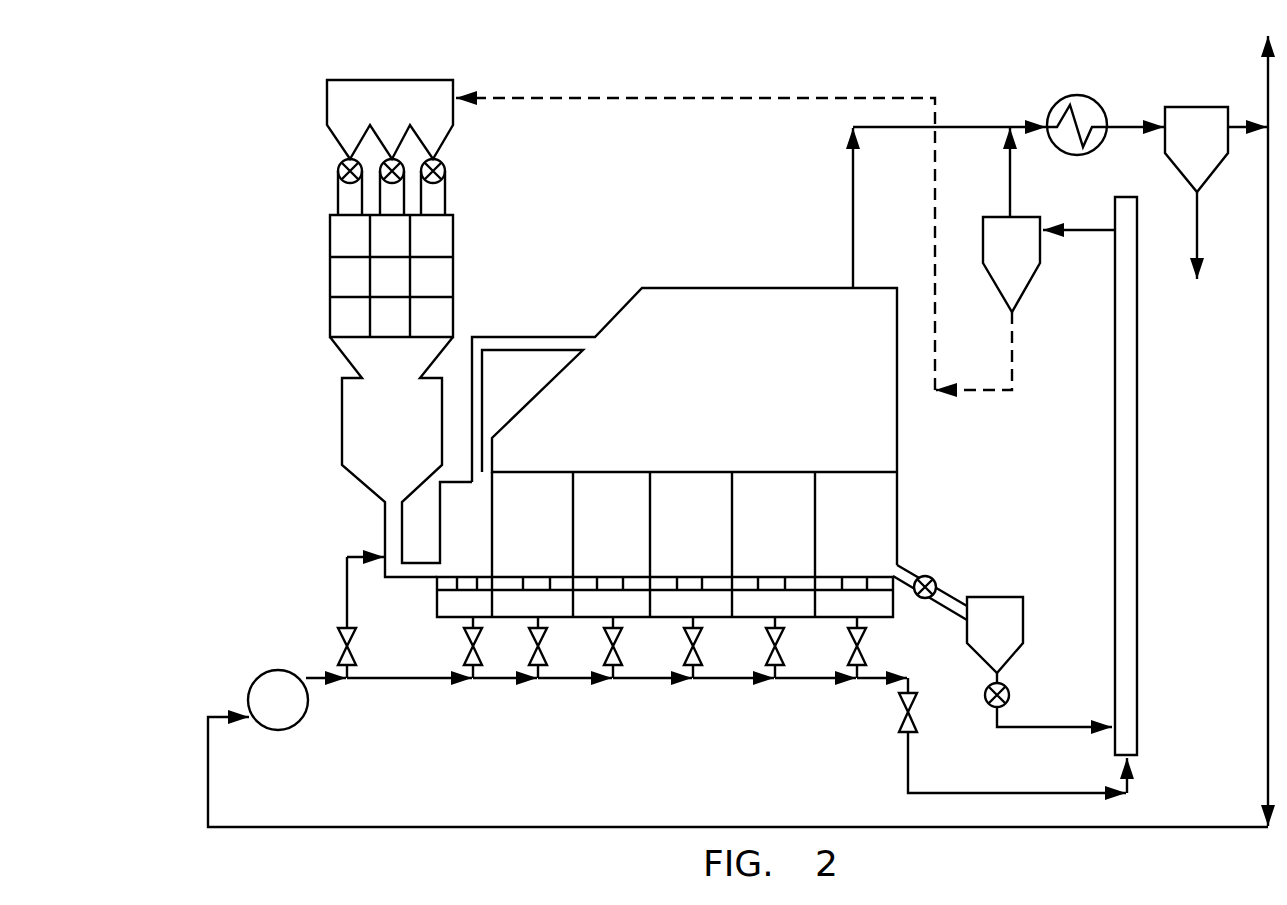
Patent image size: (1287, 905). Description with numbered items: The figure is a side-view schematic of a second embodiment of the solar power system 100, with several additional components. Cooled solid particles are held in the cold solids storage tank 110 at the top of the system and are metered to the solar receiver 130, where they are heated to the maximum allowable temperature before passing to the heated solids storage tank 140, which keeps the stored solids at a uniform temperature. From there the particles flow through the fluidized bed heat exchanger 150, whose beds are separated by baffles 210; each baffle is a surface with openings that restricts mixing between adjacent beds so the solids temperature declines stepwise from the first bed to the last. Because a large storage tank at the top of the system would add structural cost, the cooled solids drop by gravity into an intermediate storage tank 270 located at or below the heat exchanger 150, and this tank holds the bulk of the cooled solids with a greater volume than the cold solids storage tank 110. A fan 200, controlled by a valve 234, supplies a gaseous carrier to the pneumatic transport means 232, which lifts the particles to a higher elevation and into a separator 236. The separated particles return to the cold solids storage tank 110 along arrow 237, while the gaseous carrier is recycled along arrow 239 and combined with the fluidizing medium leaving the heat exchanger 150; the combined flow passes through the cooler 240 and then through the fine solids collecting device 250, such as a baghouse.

The solar power system 100 is at (220, 37).
The cold solids storage tank 110 is at (327, 125).
The solar receiver 130 is at (333, 278).
The heated solids storage tank 140 is at (342, 417).
The fluidized bed heat exchanger 150 is at (660, 292).
The baffles 210 is at (758, 492).
The fan 200 is at (248, 700).
The valve 234 is at (900, 712).
The solid particles flow to cold solids storage tank 237 is at (686, 98).
The gaseous carrier recycle flow 239 is at (1008, 210).
The cooler 240 is at (1053, 103).
The fine solids collecting device 250 is at (1218, 147).
The separator 236 is at (1033, 261).
The intermediate storage tank 270 is at (1017, 635).
The pneumatic transport means 232 is at (1137, 433).